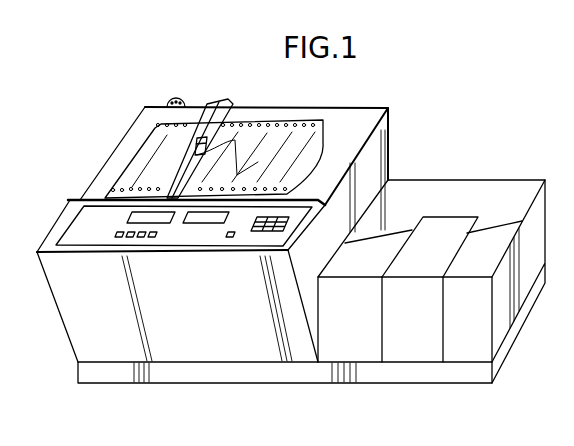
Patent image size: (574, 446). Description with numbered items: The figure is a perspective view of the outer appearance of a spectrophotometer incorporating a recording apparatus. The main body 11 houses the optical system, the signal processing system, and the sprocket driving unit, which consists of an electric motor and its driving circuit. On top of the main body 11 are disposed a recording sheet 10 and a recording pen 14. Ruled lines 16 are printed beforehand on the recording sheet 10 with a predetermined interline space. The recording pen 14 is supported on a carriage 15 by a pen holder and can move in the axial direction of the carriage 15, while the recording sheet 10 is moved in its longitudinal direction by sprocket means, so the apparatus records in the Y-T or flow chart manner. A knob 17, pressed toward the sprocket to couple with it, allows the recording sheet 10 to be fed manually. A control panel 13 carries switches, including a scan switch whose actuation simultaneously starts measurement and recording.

The recording sheet 10 is at (303, 134).
The main body 11 is at (211, 347).
The control panel 13 is at (118, 227).
The recording pen 14 is at (200, 137).
The carriage 15 is at (236, 90).
The ruled lines 16 is at (282, 131).
The knob 17 is at (176, 97).